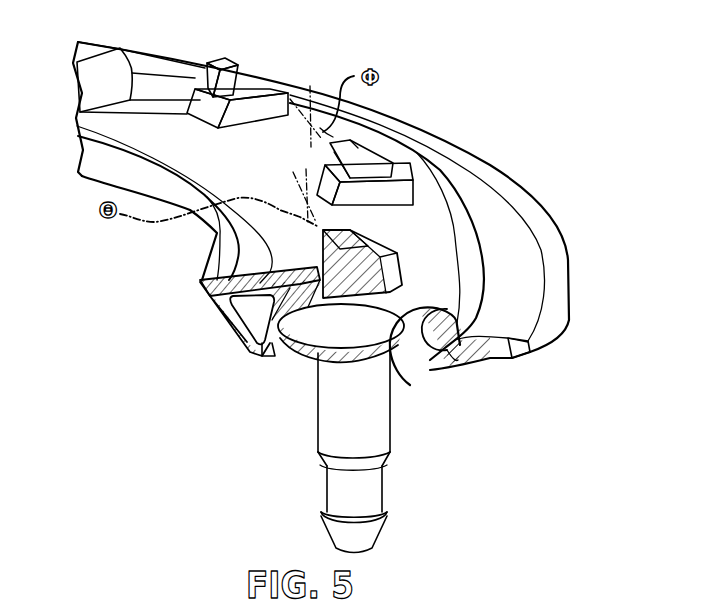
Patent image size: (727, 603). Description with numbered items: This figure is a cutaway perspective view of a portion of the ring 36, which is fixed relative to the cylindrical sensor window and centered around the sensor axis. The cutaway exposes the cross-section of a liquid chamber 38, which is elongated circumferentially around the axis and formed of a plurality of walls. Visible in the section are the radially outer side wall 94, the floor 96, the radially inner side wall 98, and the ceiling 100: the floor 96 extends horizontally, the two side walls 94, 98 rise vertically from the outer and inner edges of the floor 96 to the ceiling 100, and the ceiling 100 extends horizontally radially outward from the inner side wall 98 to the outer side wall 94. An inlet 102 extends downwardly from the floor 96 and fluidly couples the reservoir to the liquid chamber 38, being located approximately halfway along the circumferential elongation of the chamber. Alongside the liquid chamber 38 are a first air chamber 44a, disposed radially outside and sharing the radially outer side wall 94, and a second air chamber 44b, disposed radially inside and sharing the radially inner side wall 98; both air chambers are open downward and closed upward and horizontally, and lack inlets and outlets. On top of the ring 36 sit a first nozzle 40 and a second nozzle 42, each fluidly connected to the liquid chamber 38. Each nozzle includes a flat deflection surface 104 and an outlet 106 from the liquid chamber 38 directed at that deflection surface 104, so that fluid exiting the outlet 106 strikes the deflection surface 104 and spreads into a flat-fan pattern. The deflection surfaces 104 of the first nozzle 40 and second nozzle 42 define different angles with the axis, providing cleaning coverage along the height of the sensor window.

The ring 36 is at (398, 53).
The liquid chamber 38 is at (465, 203).
The first nozzle 40 is at (255, 103).
The second nozzle 42 is at (374, 158).
The first air chamber 44a is at (435, 331).
The second air chamber 44b is at (253, 313).
The radially outer side wall 94 is at (430, 368).
The floor 96 is at (348, 357).
The radially inner side wall 98 is at (277, 340).
The ceiling 100 is at (380, 312).
The inlet 102 is at (343, 489).
The deflection surface 104 is at (330, 243).
The outlet 106 is at (317, 268).